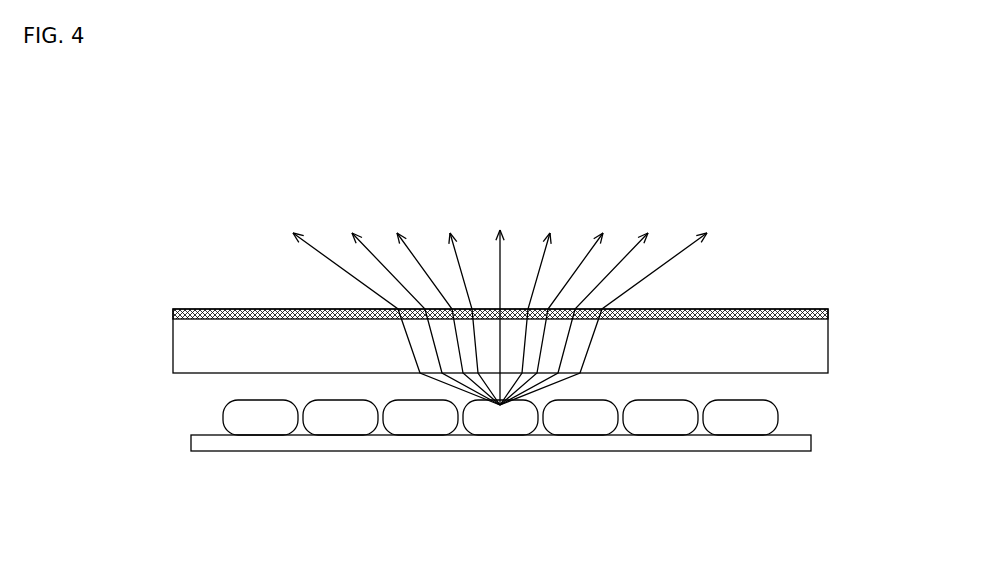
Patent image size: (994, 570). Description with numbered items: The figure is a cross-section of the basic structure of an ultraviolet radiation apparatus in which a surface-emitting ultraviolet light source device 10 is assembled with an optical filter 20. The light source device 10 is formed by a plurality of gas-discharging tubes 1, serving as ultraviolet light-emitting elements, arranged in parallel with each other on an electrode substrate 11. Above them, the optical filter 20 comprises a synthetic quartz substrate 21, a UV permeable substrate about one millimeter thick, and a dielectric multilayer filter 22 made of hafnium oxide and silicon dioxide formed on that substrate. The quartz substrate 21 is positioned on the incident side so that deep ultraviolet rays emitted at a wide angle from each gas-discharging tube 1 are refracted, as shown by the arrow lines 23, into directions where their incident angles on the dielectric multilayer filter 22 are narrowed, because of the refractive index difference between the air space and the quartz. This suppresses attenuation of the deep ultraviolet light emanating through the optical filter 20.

The gas-discharging tube 1 is at (575, 425).
The surface-emitting ultraviolet light source device 10 is at (539, 470).
The electrode substrate 11 is at (367, 445).
The optical filter 20 is at (515, 320).
The synthetic quartz substrate 21 is at (828, 349).
The dielectric multilayer filter 22 is at (828, 312).
The arrow lines 23 is at (500, 303).